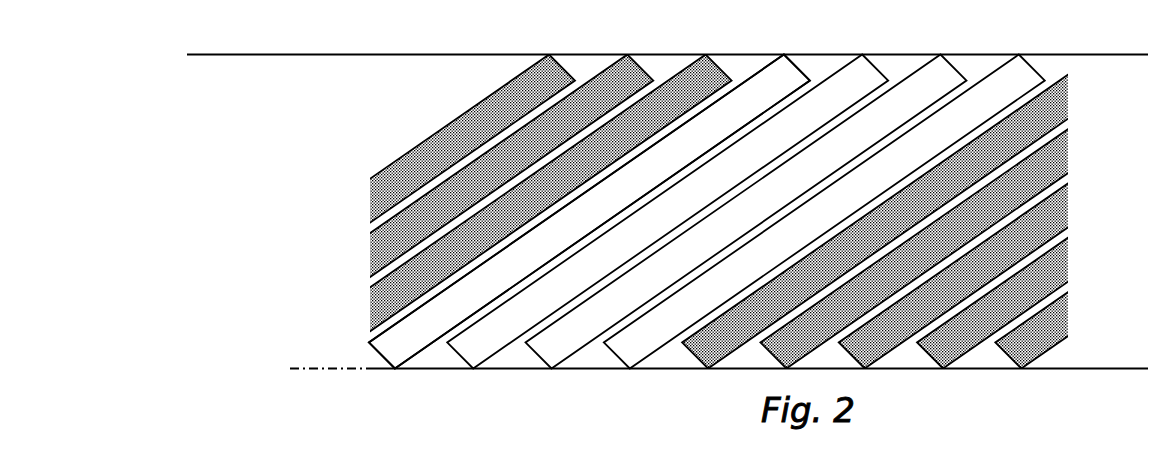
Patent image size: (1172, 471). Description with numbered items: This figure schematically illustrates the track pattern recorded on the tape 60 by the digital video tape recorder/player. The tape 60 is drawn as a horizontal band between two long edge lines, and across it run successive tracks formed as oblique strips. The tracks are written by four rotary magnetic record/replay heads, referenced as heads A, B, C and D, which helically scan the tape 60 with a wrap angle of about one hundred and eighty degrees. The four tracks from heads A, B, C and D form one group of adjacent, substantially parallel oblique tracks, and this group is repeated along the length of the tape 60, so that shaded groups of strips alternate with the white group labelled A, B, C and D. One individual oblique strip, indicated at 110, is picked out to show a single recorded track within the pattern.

The tape 60 is at (1067, 54).
The stripe 110 is at (773, 83).
The head A track A is at (589, 212).
The head B track B is at (667, 212).
The head C track C is at (746, 212).
The head D track D is at (824, 212).